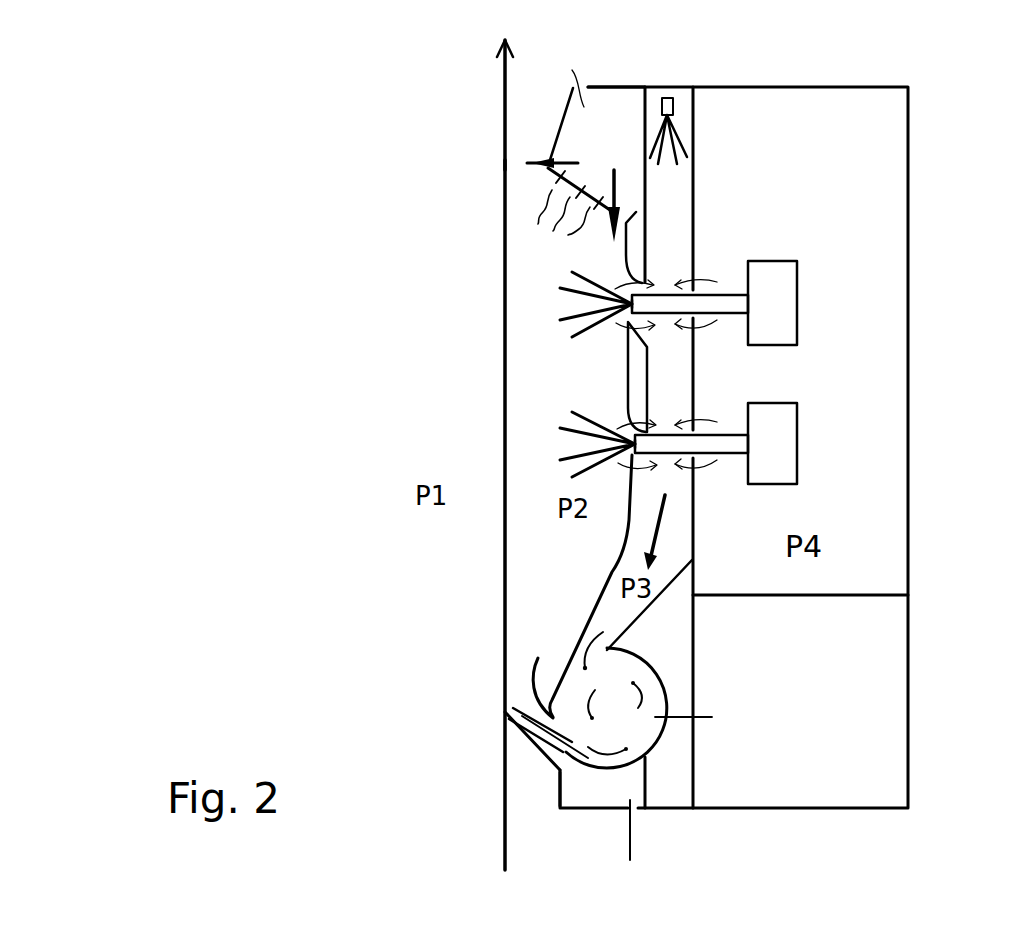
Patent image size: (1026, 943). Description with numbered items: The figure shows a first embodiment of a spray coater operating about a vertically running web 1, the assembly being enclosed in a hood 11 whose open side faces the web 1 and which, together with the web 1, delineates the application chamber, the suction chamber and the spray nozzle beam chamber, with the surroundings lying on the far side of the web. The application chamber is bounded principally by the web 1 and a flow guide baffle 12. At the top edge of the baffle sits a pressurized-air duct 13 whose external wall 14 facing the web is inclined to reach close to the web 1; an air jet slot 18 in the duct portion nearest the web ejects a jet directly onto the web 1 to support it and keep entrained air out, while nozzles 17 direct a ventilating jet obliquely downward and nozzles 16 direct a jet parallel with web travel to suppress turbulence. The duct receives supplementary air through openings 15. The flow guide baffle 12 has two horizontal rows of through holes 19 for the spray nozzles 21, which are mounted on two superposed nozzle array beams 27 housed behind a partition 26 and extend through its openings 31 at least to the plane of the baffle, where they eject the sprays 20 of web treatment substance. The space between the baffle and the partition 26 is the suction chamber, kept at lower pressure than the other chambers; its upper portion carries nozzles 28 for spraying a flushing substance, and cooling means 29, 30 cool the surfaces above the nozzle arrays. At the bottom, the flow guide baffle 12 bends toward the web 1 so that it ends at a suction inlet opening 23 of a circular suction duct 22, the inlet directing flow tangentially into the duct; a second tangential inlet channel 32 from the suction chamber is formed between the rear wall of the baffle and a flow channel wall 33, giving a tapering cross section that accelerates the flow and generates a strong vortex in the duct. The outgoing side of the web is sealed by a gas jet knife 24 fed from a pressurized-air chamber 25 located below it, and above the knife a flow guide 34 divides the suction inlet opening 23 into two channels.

The web 1 is at (505, 208).
The hood 11 is at (908, 272).
The flow guide baffle 12 is at (622, 547).
The pressurized-air duct 13 is at (616, 106).
The external wall 14 is at (555, 125).
The openings 15 is at (574, 72).
The nozzles 16 is at (611, 183).
The nozzles 17 is at (571, 233).
The air jet slot 18 is at (530, 163).
The through holes 19 is at (628, 321).
The sprays 20 is at (568, 431).
The spray nozzles 21 is at (734, 290).
The suction duct 22 is at (660, 673).
The suction inlet opening 23 is at (523, 697).
The gas jet knife 24 is at (505, 737).
The pressurized-air chamber 25 is at (576, 796).
The partition 26 is at (695, 530).
The nozzle array beams 27 is at (786, 420).
The nozzles 28 is at (668, 96).
The cooling means 29 is at (647, 235).
The cooling means 30 is at (642, 340).
The openings 31 is at (645, 322).
The inlet channel 32 is at (602, 633).
The flow channel wall 33 is at (668, 588).
The flow guide 34 is at (503, 710).